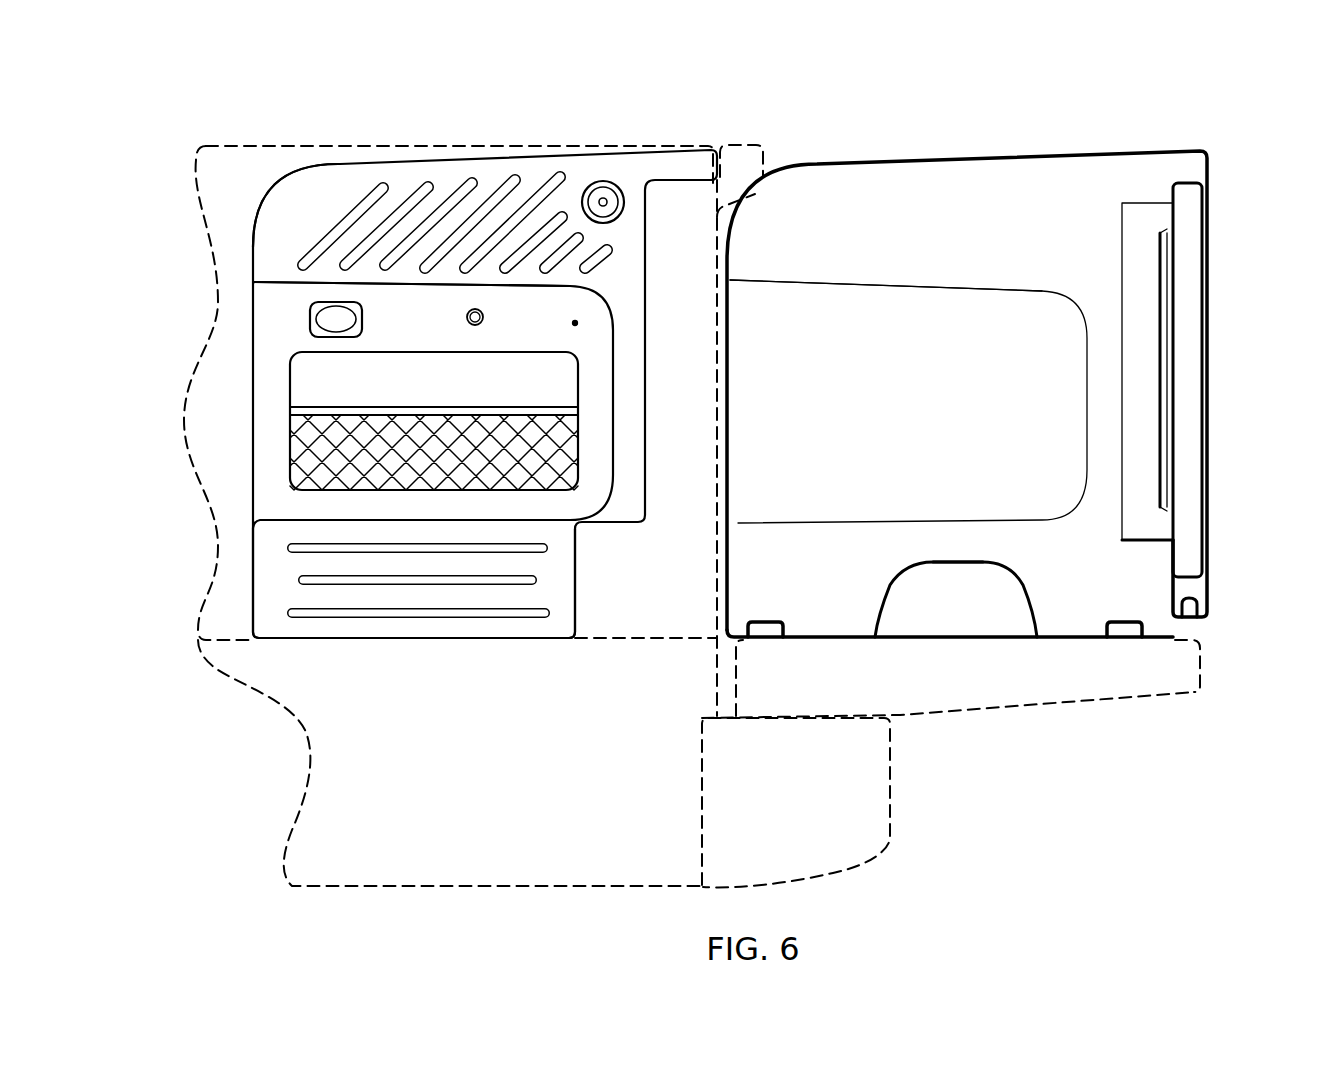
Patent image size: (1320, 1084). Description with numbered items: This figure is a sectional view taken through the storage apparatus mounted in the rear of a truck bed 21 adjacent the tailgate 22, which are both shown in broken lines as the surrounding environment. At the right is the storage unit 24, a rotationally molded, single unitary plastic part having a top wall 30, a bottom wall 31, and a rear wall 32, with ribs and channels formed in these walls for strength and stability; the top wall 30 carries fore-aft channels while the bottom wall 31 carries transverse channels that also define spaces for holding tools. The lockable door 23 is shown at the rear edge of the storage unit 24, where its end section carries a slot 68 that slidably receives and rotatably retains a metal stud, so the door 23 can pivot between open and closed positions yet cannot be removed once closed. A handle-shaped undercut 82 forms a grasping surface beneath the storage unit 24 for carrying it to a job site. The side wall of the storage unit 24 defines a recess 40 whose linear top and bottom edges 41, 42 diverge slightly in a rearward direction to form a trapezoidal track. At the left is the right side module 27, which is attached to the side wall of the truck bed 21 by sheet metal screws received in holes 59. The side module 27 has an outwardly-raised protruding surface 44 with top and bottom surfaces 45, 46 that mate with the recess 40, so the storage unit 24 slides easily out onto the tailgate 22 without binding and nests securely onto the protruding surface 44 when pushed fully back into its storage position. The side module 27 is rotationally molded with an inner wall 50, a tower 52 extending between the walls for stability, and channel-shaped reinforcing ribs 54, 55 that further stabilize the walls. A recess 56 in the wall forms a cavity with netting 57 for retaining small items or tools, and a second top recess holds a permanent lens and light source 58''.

The truck bed 21 is at (223, 637).
The tailgate 22 is at (1200, 694).
The lockable door 23 is at (1210, 253).
The storage unit 24 is at (1082, 148).
The right side module 27 is at (273, 157).
The top wall 30 is at (993, 157).
The bottom wall 31 is at (1077, 640).
The rear wall 32 is at (723, 398).
The recess 40 is at (862, 328).
The top edge 41 is at (887, 281).
The bottom edge 42 is at (852, 523).
The protruding surface 44 is at (268, 437).
The top surface 45 is at (287, 280).
The bottom surface 46 is at (277, 527).
The inner wall 50 is at (295, 213).
The tower 52 is at (581, 194).
The channel-shaped reinforcing rib 54 is at (492, 193).
The channel-shaped reinforcing rib 55 is at (398, 552).
The recess 56 is at (555, 385).
The netting 57 is at (323, 452).
The permanent lens and light source 58'' is at (262, 309).
The hole 59 is at (605, 200).
The slot 68 is at (1192, 619).
The handle-shaped undercut 82 is at (948, 622).